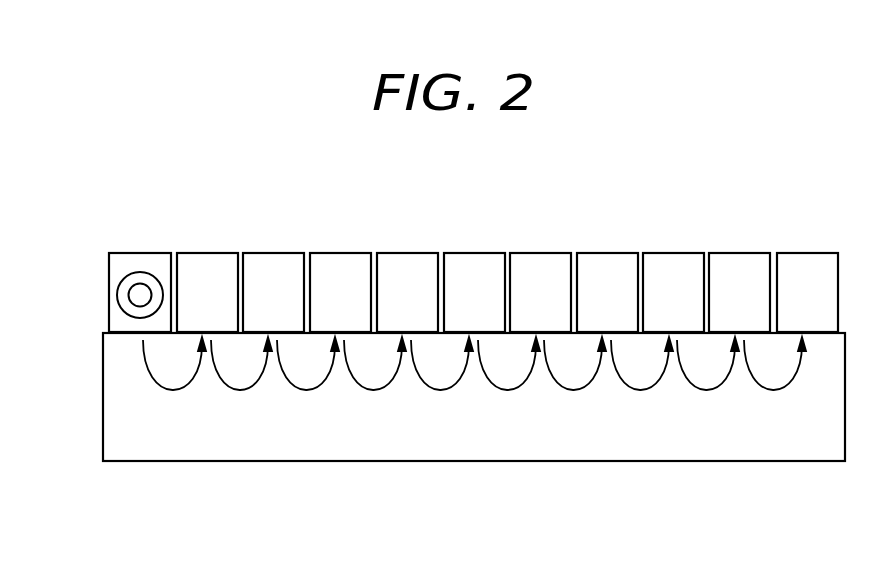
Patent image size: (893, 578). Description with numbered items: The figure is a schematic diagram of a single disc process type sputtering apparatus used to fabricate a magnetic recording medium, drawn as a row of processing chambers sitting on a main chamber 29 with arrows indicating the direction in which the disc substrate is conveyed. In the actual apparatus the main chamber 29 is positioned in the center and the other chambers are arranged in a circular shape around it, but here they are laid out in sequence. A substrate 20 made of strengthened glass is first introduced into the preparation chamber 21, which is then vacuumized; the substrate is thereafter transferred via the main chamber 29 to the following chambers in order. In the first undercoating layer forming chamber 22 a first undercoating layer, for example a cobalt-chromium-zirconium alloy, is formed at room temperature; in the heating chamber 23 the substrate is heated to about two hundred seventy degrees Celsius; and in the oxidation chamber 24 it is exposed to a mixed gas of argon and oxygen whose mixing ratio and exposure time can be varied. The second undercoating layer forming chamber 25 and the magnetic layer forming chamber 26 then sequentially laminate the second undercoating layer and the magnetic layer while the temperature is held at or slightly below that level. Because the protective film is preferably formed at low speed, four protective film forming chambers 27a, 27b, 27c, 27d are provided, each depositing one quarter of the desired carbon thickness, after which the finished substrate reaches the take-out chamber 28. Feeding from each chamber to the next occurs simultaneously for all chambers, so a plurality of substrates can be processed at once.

The substrate 20 is at (122, 292).
The preparation chamber 21 is at (140, 260).
The first undercoating layer forming chamber 22 is at (207, 260).
The heating chamber 23 is at (274, 260).
The oxidation chamber 24 is at (336, 260).
The second undercoating layer forming chamber 25 is at (402, 260).
The magnetic layer forming chamber 26 is at (469, 260).
The protective film forming chamber 27a is at (535, 260).
The protective film forming chamber 27b is at (601, 260).
The protective film forming chamber 27c is at (667, 260).
The protective film forming chamber 27d is at (734, 260).
The take-out chamber 28 is at (801, 260).
The main chamber 29 is at (781, 443).